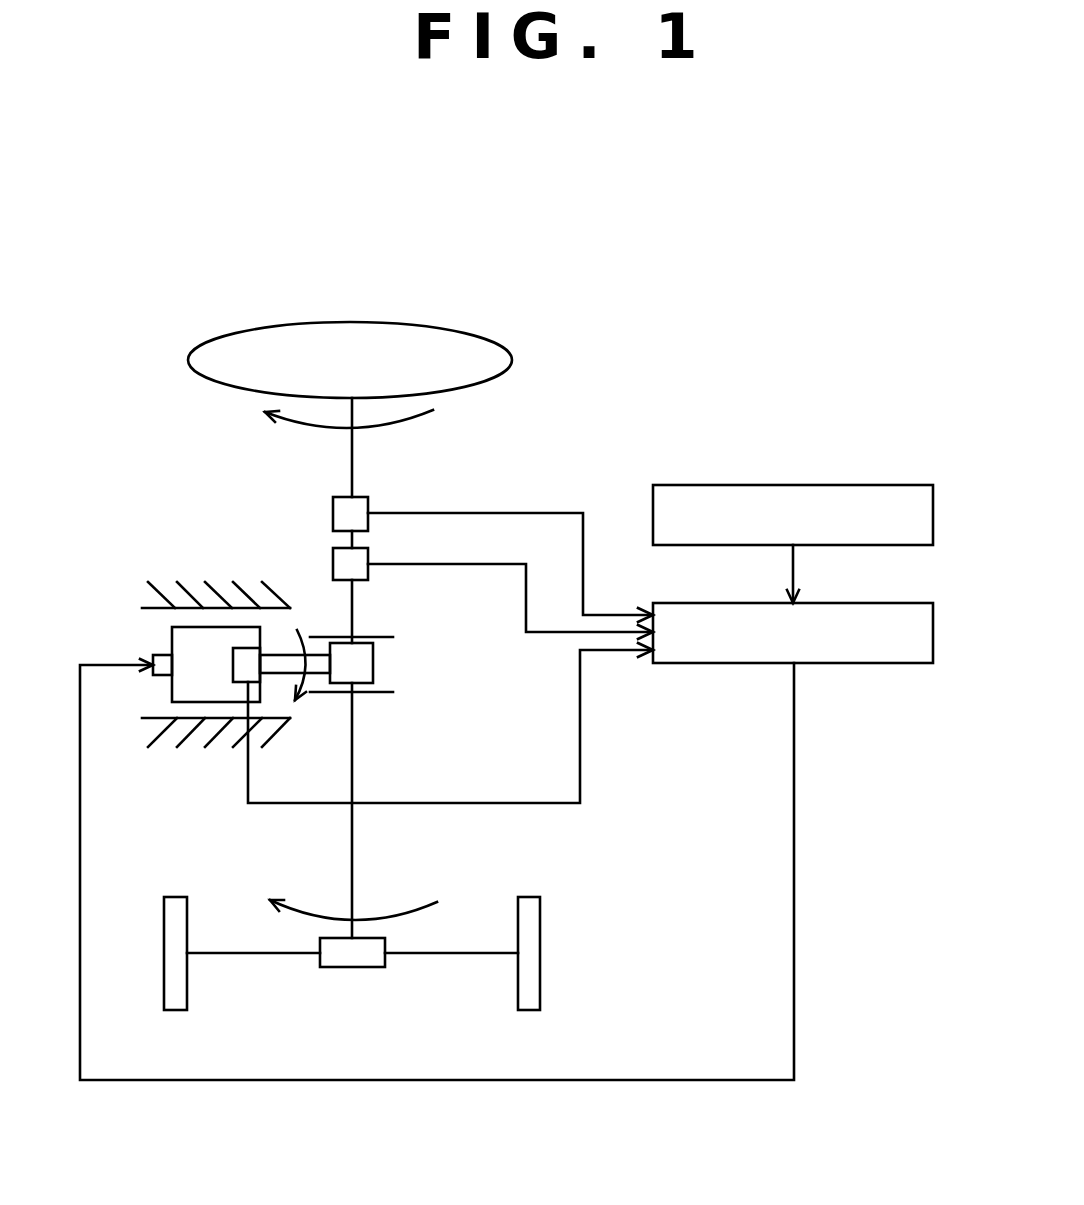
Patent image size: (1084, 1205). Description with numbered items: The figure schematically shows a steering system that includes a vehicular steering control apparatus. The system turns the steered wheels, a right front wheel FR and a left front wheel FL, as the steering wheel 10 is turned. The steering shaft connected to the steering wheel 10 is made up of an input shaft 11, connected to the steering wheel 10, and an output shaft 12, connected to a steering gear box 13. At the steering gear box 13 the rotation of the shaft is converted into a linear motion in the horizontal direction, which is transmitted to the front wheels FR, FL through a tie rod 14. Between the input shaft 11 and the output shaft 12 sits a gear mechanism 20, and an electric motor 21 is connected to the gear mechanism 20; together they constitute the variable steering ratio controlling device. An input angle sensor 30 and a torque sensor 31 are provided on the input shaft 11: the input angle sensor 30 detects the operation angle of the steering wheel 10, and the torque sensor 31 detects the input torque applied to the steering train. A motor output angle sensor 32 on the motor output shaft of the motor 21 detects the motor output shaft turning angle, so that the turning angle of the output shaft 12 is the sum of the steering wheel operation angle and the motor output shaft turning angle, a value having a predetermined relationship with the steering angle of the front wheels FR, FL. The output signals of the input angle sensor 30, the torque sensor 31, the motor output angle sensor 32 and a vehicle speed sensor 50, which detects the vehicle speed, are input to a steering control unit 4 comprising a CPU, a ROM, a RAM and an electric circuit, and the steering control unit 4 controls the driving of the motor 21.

The steering wheel 10 is at (352, 322).
The input shaft 11 is at (352, 477).
The output shaft 12 is at (352, 858).
The steering gear box 13 is at (354, 967).
The tie rod 14 is at (438, 953).
The gear mechanism 20 is at (373, 663).
The electric motor 21 is at (195, 627).
The input angle sensor 30 is at (333, 513).
The torque sensor 31 is at (333, 564).
The motor output angle sensor 32 is at (250, 648).
The vehicle speed sensor 50 is at (920, 485).
The steering control unit 4 is at (912, 663).
The left front wheel FL is at (178, 1010).
The right front wheel FR is at (528, 1010).